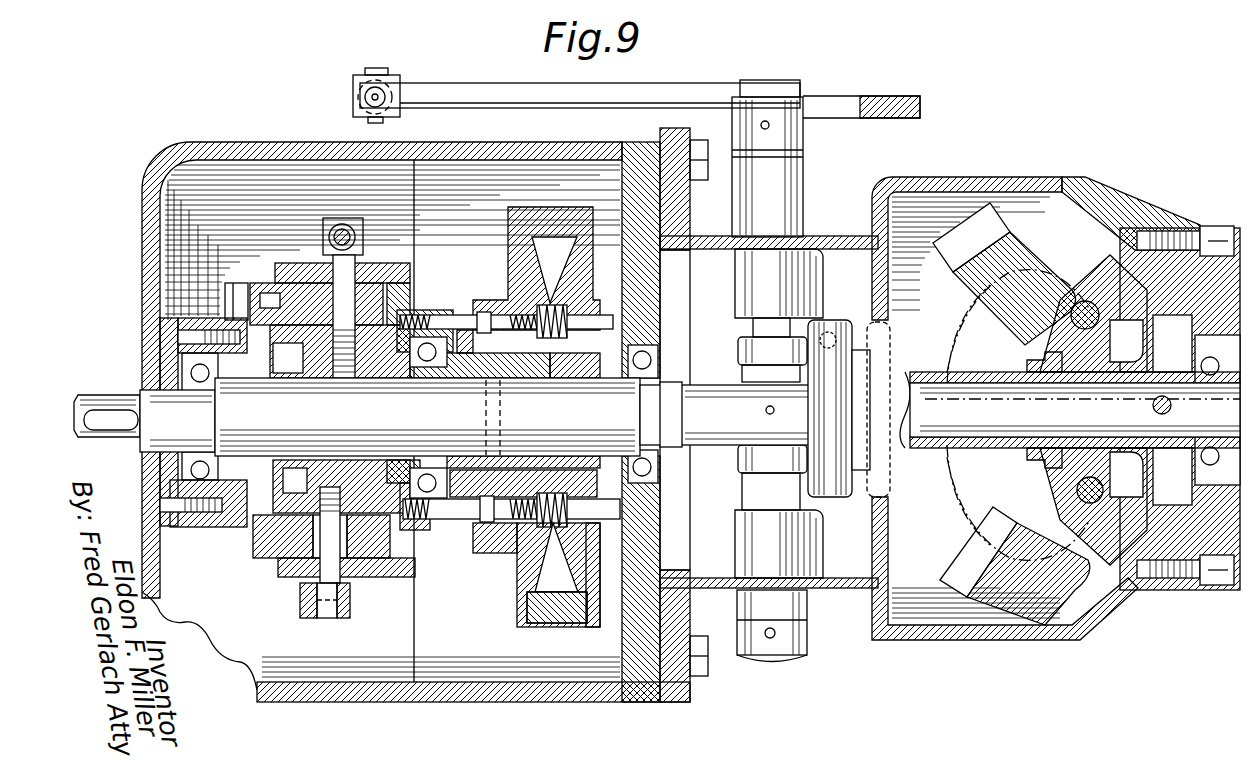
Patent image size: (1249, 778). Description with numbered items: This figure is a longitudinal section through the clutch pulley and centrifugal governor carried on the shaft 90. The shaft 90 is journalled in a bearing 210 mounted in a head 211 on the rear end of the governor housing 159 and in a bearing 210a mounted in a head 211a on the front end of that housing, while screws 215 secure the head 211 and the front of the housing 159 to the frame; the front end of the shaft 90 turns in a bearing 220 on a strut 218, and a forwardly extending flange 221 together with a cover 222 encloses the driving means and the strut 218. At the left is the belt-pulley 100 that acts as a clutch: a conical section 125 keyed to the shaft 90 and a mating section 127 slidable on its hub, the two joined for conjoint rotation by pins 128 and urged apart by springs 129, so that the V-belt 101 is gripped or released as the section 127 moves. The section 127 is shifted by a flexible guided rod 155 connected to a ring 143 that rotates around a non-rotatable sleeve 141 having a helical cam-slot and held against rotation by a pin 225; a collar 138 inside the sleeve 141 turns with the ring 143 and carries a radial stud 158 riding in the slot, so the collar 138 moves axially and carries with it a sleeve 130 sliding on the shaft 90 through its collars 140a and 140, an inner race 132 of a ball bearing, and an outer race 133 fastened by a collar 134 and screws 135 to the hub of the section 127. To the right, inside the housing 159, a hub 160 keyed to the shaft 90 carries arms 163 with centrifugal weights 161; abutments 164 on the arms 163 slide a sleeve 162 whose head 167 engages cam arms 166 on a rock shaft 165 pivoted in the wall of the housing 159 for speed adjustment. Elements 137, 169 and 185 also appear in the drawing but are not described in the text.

The shaft 90 is at (103, 405).
The belt-pulley 100 is at (507, 252).
The V-belt 101 is at (553, 627).
The conical section 125 is at (593, 627).
The mating section 127 is at (513, 610).
The pins 128 is at (583, 315).
The springs 129 is at (530, 553).
The sleeve 130 is at (427, 373).
The inner race 132 is at (427, 450).
The outer race 133 is at (445, 314).
The collar 134 is at (420, 314).
The screws 135 is at (465, 314).
The ball bearing 137 is at (440, 457).
The collar 138 is at (370, 363).
The collar 140 is at (413, 360).
The collar 140a is at (277, 378).
The non-rotatable sleeve 141 is at (254, 553).
The ring 143 is at (293, 266).
The flexible guided rod 155 is at (362, 238).
The radial stud 158 is at (300, 583).
The housing 159 is at (940, 641).
The hub 160 is at (1150, 343).
The centrifugal weights 161 is at (965, 268).
The sleeve 162 is at (1000, 338).
The arms 163 is at (1071, 313).
The abutments 164 is at (1043, 357).
The rock shaft 165 is at (765, 325).
The cam arms 166 is at (775, 352).
The head 167 is at (850, 405).
The link 169 is at (488, 84).
The lever 185 is at (890, 87).
The bearing 210 is at (672, 372).
The bearing 210a is at (1162, 397).
The head 211 is at (666, 520).
The head 211a is at (1210, 523).
The screws 215 is at (694, 152).
The strut 218 is at (198, 520).
The bearing 220 is at (158, 372).
The flange 221 is at (550, 703).
The cover 222 is at (390, 703).
The pin 225 is at (245, 285).